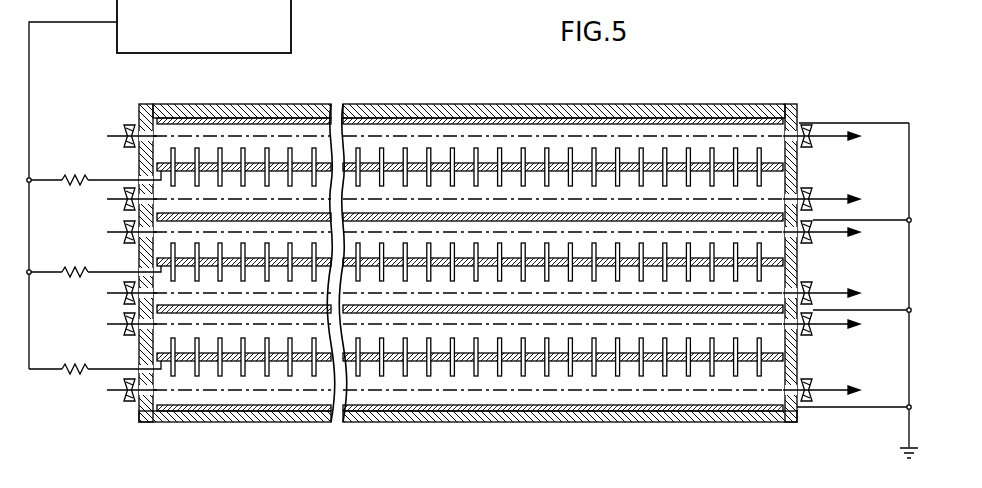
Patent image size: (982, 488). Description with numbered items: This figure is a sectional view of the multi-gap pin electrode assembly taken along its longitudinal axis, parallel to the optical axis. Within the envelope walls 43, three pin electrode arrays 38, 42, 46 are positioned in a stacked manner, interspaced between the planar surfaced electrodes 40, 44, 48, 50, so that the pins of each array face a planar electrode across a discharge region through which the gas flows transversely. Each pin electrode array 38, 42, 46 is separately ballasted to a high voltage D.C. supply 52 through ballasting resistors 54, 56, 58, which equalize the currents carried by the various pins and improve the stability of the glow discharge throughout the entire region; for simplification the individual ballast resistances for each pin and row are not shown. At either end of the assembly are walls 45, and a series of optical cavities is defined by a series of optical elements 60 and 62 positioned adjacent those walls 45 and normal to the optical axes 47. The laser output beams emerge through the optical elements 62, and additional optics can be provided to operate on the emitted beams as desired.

The pin electrode array 38 is at (485, 363).
The planar surfaced electrode 40 is at (173, 314).
The pin electrode array 42 is at (576, 257).
The envelope walls 43 is at (747, 104).
The planar surfaced electrode 44 is at (173, 222).
The end walls 45 is at (141, 107).
The pin electrode array 46 is at (629, 162).
The optical axes 47 is at (838, 137).
The planar surfaced electrode 48 is at (223, 121).
The planar surfaced electrode 50 is at (244, 409).
The high voltage D.C. supply 52 is at (291, 9).
The ballasting resistor 54 is at (70, 366).
The ballasting resistor 56 is at (72, 268).
The ballasting resistor 58 is at (72, 176).
The optical elements 60 is at (124, 131).
The optical elements 62 is at (819, 165).